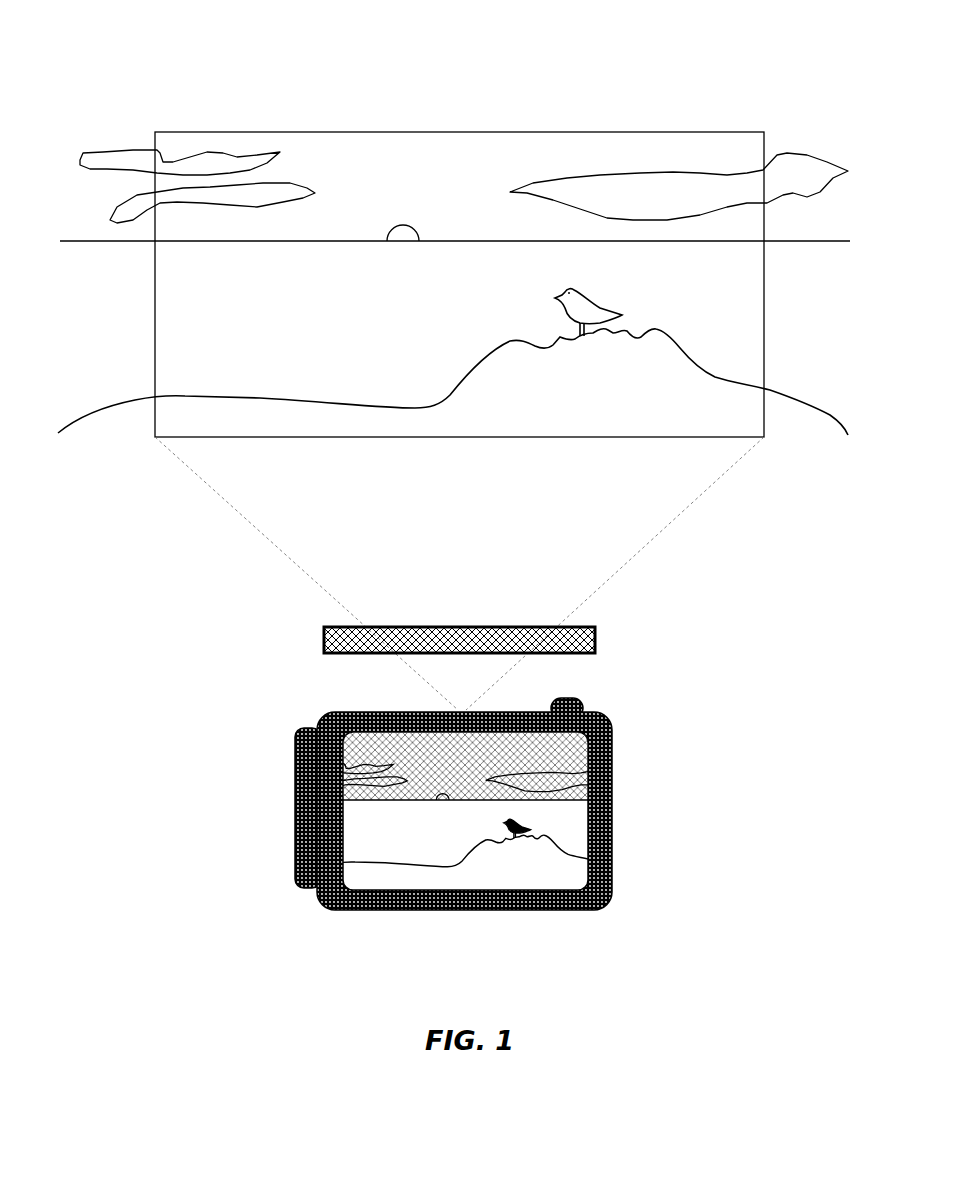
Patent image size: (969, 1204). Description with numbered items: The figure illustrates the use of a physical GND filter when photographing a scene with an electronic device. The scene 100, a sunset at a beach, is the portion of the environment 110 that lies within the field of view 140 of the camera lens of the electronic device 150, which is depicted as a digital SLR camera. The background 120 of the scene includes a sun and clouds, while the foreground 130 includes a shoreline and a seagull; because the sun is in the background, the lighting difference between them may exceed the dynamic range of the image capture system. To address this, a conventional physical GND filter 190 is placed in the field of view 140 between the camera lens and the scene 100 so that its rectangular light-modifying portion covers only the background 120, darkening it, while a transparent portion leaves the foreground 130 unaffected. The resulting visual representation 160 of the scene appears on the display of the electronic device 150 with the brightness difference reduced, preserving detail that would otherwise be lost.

The environment 110 is at (141, 52).
The scene 100 is at (445, 132).
The background 120 is at (423, 190).
The foreground 130 is at (423, 329).
The field of view 140 is at (607, 577).
The physical GND filter 190 is at (516, 627).
The electronic device 150 is at (330, 712).
The visual representation 160 is at (570, 897).